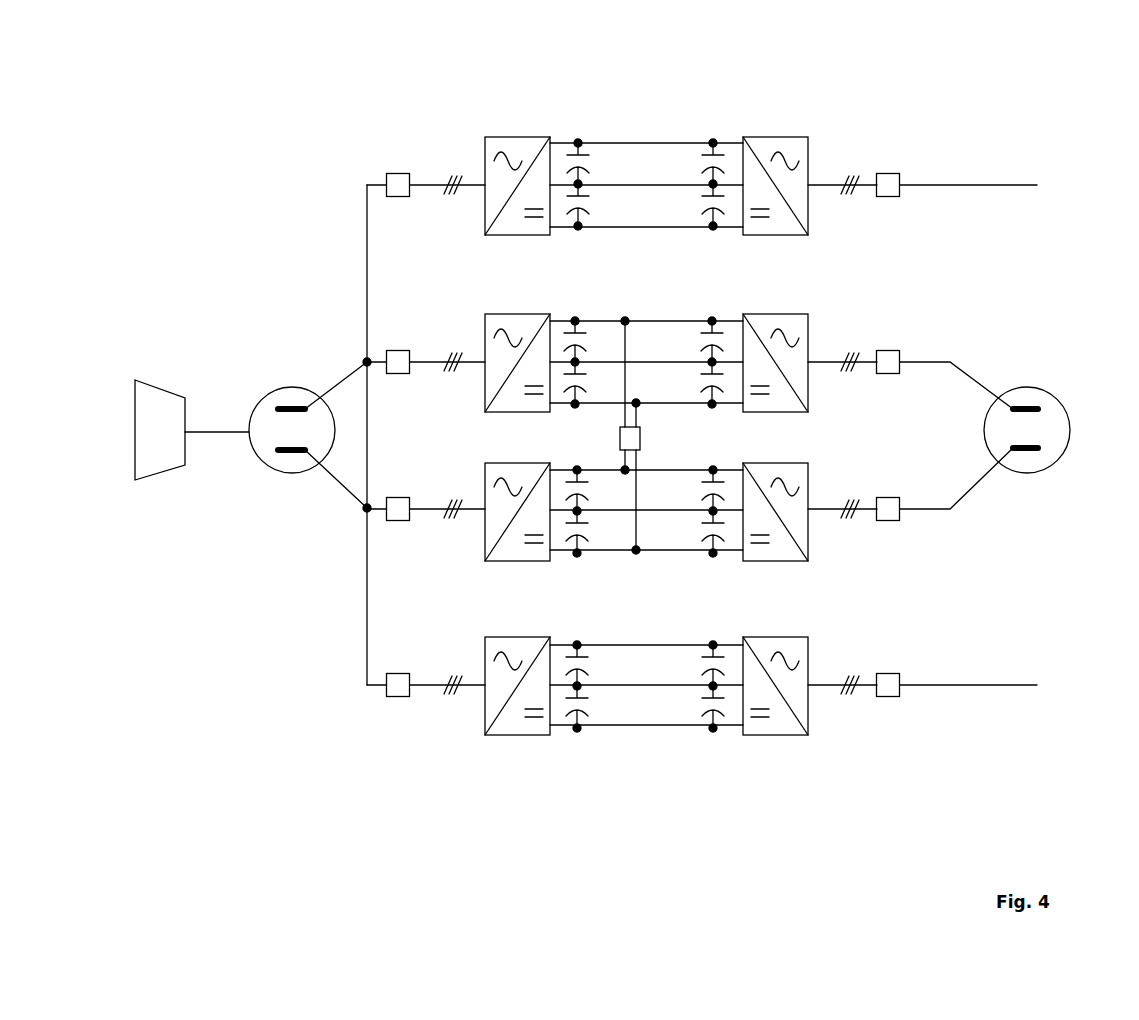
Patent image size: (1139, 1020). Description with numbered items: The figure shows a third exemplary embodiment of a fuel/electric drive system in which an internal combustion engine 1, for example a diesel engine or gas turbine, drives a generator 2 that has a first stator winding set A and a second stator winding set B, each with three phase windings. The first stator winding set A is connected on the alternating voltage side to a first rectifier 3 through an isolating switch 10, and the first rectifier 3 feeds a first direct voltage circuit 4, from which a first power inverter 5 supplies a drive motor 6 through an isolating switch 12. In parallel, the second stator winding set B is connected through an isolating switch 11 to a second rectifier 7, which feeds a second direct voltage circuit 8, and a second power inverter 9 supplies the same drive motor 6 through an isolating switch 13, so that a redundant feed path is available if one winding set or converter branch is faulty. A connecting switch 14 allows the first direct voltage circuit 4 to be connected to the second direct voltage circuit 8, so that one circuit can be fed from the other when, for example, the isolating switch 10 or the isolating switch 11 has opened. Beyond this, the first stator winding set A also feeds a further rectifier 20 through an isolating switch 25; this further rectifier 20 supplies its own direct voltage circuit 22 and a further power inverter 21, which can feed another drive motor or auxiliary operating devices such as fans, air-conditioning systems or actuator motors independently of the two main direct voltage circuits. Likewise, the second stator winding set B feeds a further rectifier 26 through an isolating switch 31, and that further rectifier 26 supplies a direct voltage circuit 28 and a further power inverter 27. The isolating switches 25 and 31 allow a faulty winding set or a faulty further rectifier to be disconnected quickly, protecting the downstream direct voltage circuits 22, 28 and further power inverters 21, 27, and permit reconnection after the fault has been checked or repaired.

The internal combustion engine 1 is at (153, 386).
The generator 2 is at (256, 400).
The first stator winding set A is at (283, 406).
The second stator winding set B is at (283, 453).
The isolating switch 10 is at (396, 350).
The isolating switch 25 is at (400, 173).
The isolating switch 11 is at (399, 521).
The isolating switch 31 is at (399, 697).
The first rectifier 3 is at (498, 314).
The further rectifier 20 is at (498, 137).
The second rectifier 7 is at (525, 557).
The further rectifier 26 is at (518, 733).
The first direct voltage circuit 4 is at (650, 298).
The direct voltage circuit 22 is at (650, 124).
The second direct voltage circuit 8 is at (656, 575).
The direct voltage circuit 28 is at (641, 748).
The connecting switch 14 is at (620, 427).
The first power inverter 5 is at (768, 314).
The further power inverter 21 is at (772, 137).
The second power inverter 9 is at (767, 557).
The further power inverter 27 is at (782, 733).
The isolating switch 12 is at (885, 350).
The isolating switch 13 is at (897, 521).
The drive motor 6 is at (1047, 388).